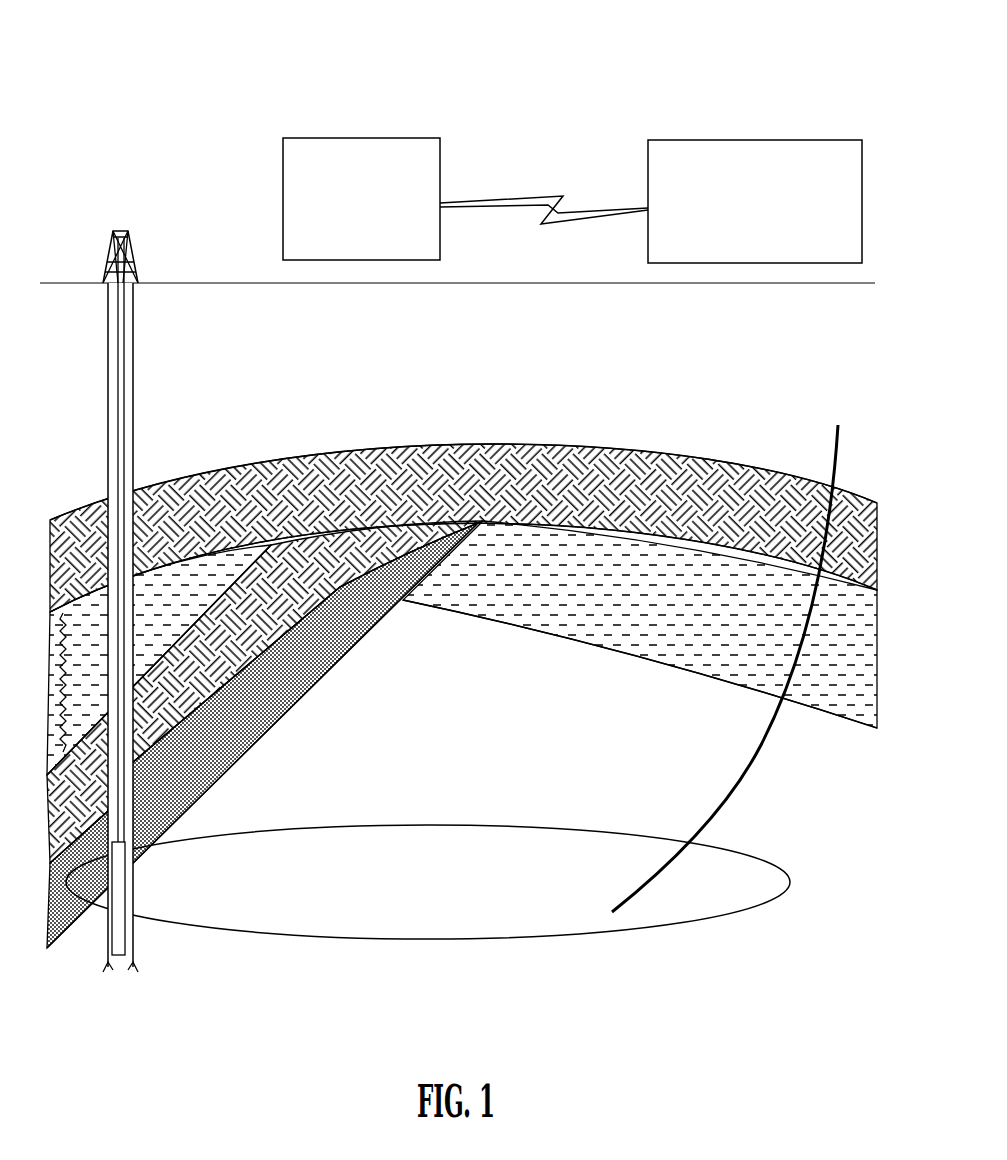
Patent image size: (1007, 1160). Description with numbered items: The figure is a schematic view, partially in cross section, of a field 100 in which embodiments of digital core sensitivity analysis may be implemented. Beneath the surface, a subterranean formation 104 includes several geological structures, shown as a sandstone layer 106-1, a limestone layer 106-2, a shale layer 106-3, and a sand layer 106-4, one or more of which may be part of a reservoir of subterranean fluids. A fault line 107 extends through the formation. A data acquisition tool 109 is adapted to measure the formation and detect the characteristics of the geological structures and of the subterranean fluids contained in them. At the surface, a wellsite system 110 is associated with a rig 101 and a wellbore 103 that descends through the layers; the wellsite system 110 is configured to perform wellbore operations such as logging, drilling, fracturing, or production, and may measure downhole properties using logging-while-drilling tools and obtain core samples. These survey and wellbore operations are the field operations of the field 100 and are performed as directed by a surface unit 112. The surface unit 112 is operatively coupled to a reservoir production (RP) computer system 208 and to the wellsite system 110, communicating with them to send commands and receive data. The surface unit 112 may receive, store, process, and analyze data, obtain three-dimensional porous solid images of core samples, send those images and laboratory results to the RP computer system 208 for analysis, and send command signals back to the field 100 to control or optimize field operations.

The field 100 is at (627, 41).
The rig 101 is at (110, 258).
The wellbore 103 is at (137, 380).
The subterranean formation 104 is at (490, 744).
The sandstone layer 106-1 is at (273, 519).
The limestone layer 106-2 is at (197, 617).
The shale layer 106-3 is at (267, 633).
The sand layer 106-4 is at (340, 652).
The fault line 107 is at (831, 451).
The data acquisition tool 109 is at (118, 940).
The wellsite system 110 is at (137, 216).
The surface unit 112 is at (380, 225).
The reservoir production (RP) computer system 208 is at (773, 255).